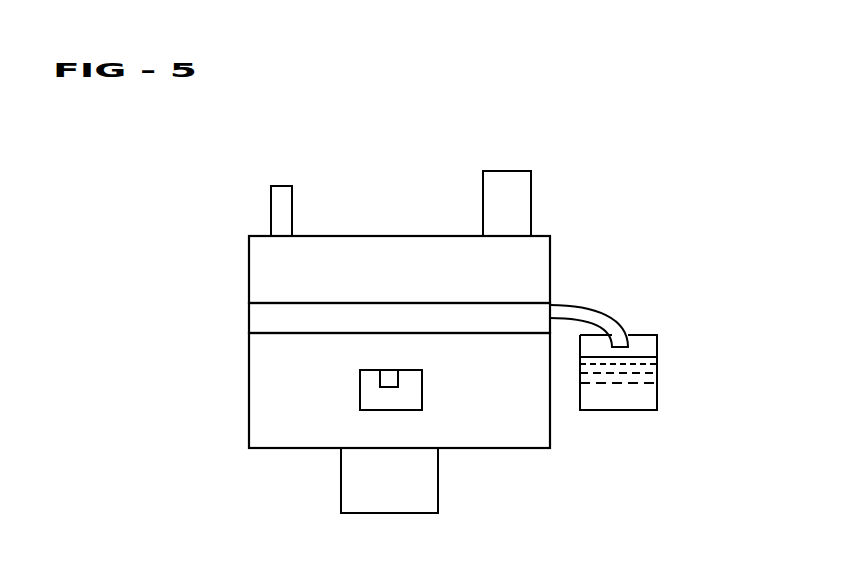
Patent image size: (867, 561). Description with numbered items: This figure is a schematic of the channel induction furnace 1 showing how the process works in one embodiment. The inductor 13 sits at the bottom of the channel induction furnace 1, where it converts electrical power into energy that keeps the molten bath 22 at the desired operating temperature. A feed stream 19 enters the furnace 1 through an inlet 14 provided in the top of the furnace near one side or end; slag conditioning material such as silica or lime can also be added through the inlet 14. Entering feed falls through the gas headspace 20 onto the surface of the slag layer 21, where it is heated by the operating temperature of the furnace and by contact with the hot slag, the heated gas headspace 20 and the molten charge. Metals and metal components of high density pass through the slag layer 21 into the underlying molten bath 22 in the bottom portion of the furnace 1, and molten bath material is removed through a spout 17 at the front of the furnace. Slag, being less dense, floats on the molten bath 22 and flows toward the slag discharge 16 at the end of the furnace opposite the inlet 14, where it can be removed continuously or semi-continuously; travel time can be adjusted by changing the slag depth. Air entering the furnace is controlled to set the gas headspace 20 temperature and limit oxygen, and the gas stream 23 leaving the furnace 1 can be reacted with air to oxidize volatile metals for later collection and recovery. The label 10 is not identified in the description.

The channel induction furnace 1 is at (618, 183).
The outlet conduit 10 is at (532, 182).
The inductor 13 is at (340, 482).
The inlet 14 is at (289, 186).
The slag discharge 16 is at (597, 302).
The spout 17 is at (404, 381).
The feed stream 19 is at (280, 184).
The gas headspace 20 is at (249, 255).
The slag layer 21 is at (266, 317).
The molten bath 22 is at (249, 382).
The gas stream 23 is at (507, 171).